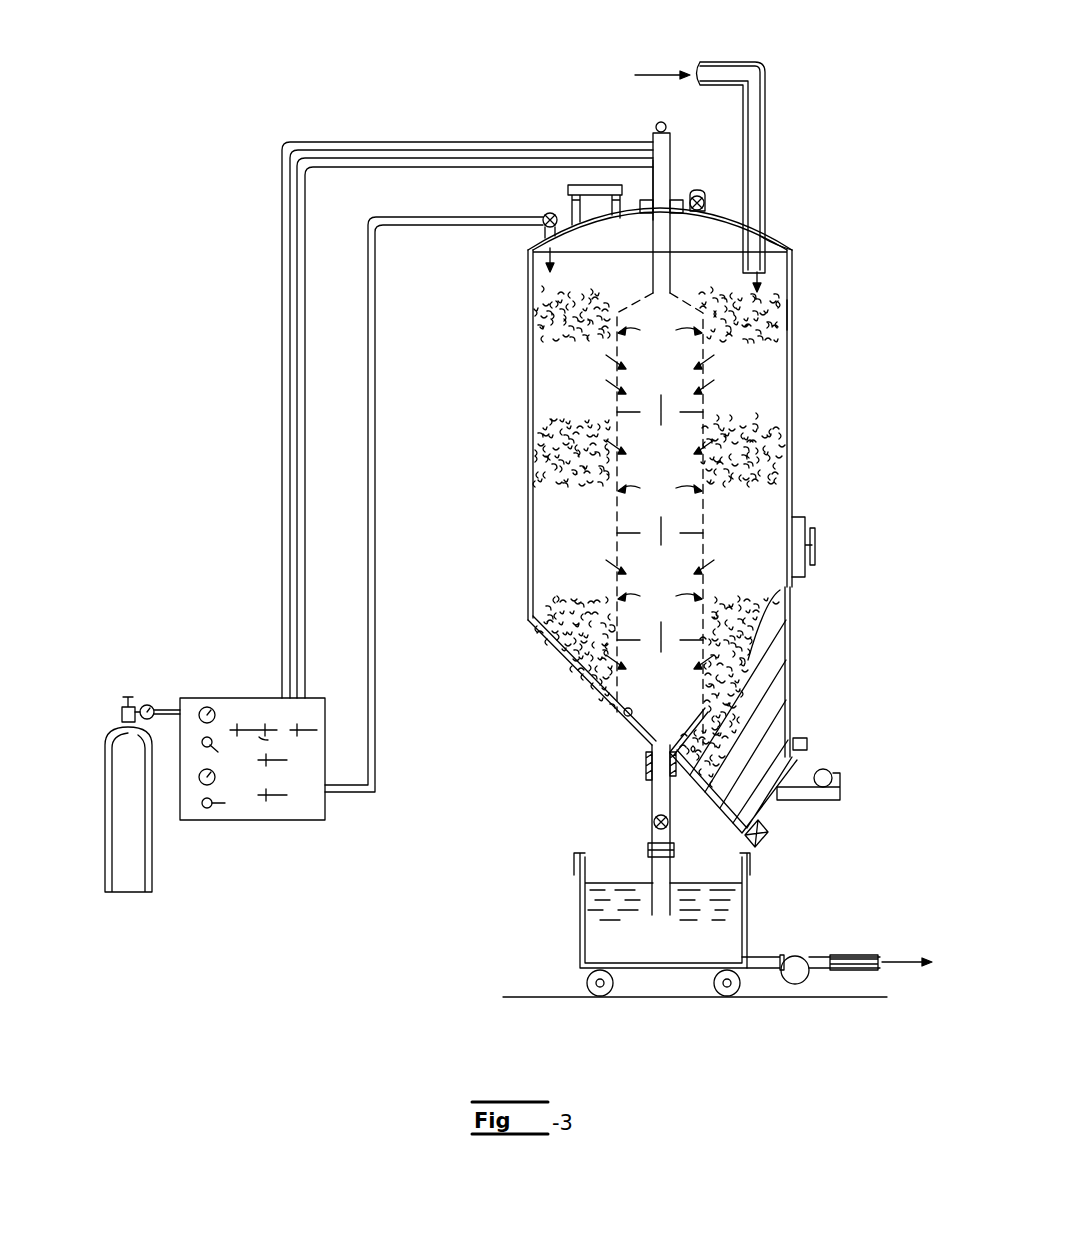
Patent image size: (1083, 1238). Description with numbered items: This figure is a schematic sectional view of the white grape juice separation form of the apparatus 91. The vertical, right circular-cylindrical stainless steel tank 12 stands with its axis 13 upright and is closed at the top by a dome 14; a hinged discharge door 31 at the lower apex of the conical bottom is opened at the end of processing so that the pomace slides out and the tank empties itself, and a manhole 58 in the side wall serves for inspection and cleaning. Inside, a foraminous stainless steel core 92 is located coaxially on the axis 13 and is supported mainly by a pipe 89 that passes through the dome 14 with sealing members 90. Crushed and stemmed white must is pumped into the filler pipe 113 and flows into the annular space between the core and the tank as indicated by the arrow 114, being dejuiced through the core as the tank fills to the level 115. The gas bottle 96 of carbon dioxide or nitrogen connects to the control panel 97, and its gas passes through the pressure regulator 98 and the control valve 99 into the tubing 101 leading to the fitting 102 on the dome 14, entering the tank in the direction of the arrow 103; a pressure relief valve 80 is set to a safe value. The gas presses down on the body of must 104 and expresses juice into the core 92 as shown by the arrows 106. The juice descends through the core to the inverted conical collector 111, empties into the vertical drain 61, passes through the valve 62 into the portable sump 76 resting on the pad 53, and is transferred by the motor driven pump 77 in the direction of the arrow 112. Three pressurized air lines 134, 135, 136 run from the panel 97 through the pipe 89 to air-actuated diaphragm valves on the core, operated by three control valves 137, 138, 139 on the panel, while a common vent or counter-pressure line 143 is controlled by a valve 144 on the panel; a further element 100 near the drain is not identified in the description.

The tank 12 is at (793, 400).
The axis 13 is at (652, 234).
The dome 14 is at (770, 240).
The discharge door 31 is at (758, 799).
The pad 53 is at (527, 990).
The manhole 58 is at (805, 517).
The vertical fluid drain 61 is at (652, 790).
The valve 62 is at (654, 822).
The portable sump 76 is at (580, 934).
The motor driven pump 77 is at (793, 985).
The pressure relief valve 80 is at (705, 203).
The pipe 89 is at (671, 272).
The sealing members 90 is at (672, 201).
The apparatus 91 is at (797, 316).
The core 92 is at (706, 441).
The gas bottle 96 is at (104, 814).
The control panel 97 is at (258, 698).
The pressure regulator 98 is at (207, 812).
The control valve 99 is at (270, 800).
The collar 100 is at (646, 759).
The tubing 101 is at (376, 770).
The fitting 102 is at (542, 224).
The arrow 103 is at (528, 264).
The body of must 104 is at (540, 432).
The arrows 106 is at (660, 494).
The inverted conical collector 111 is at (624, 714).
The arrow 112 is at (905, 958).
The filler pipe 113 is at (767, 140).
The arrow 114 is at (668, 40).
The level 115 is at (570, 294).
The pressurized air line 134 is at (366, 142).
The pressurized air line 135 is at (415, 150).
The pressurized air line 136 is at (480, 158).
The control valve 137 is at (243, 730).
The control valve 138 is at (270, 738).
The control valve 139 is at (306, 730).
The common line 143 is at (492, 170).
The valve 144 is at (269, 760).